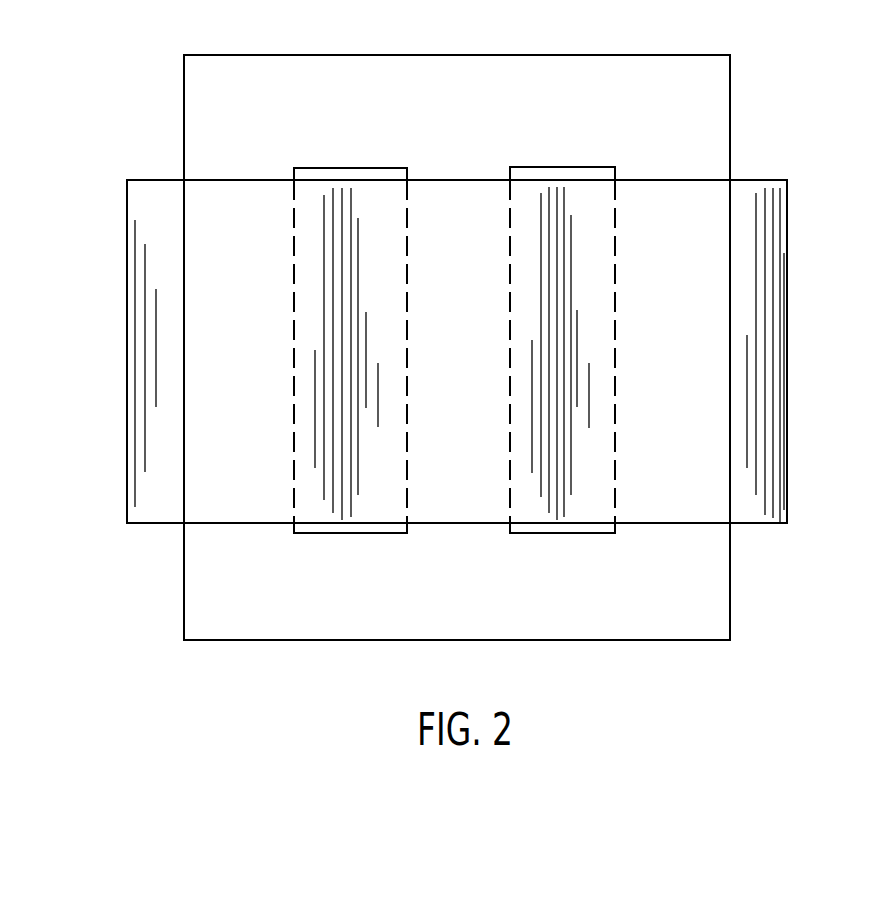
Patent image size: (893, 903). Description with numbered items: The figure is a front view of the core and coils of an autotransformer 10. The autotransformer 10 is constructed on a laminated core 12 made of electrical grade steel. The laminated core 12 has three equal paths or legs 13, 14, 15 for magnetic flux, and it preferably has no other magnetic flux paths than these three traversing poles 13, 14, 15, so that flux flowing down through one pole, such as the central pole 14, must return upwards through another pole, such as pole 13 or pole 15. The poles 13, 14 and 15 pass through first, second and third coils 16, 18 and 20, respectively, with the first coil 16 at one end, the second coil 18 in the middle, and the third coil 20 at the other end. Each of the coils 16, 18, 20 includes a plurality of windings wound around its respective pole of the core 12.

The autotransformer 10 is at (97, 376).
The laminated core 12 is at (572, 58).
The first leg 13 is at (216, 524).
The second leg 14 is at (458, 524).
The third leg 15 is at (681, 524).
The first coil 16 is at (137, 232).
The second coil 18 is at (457, 187).
The third coil 20 is at (775, 230).